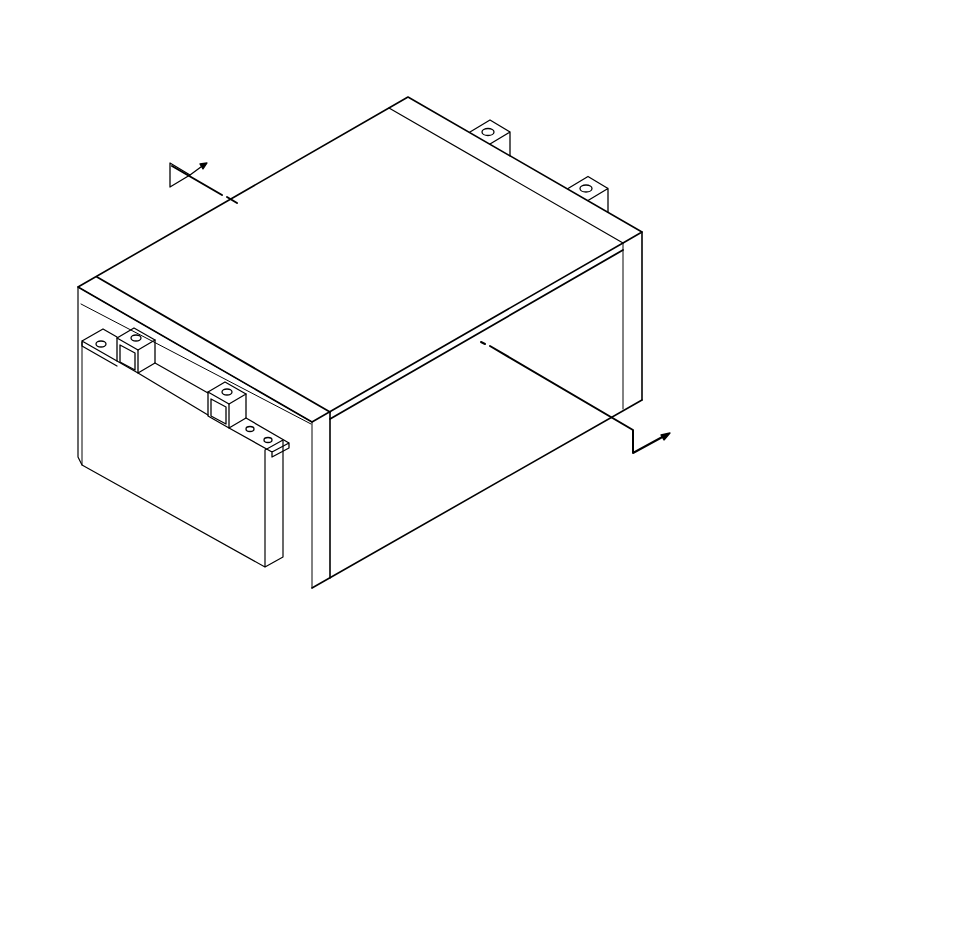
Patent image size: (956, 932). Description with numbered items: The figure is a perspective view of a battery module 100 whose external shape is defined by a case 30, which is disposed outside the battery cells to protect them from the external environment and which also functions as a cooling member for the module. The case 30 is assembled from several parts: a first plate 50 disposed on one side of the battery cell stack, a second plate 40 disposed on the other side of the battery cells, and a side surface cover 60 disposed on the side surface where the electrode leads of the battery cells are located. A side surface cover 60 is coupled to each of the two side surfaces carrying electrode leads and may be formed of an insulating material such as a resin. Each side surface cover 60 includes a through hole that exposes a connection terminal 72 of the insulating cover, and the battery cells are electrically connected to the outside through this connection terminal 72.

The battery module 100 is at (326, 34).
The case 30 is at (750, 198).
The second plate 40 is at (587, 238).
The first plate 50 is at (598, 307).
The side surface cover 60 is at (633, 353).
The connection terminal 72 is at (240, 432).